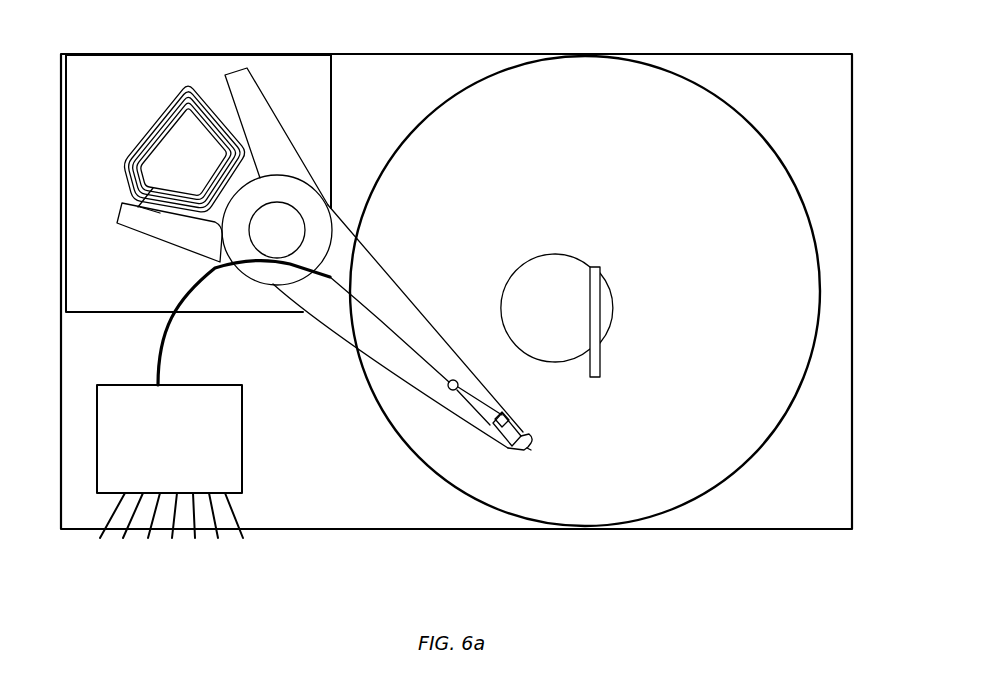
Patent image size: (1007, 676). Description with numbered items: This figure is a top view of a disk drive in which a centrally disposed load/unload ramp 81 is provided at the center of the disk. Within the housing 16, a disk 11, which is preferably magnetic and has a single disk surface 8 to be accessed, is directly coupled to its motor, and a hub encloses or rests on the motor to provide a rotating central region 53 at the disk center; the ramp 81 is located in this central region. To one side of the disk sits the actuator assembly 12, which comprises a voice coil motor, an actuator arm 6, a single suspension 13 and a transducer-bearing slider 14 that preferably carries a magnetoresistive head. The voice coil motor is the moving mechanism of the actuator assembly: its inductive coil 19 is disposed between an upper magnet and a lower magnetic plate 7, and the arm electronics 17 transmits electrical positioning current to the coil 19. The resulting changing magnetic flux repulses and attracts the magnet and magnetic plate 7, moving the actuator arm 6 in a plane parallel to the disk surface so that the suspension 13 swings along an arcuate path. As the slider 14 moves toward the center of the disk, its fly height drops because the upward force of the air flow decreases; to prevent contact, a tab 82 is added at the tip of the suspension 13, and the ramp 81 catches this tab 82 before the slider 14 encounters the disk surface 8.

The housing 16 is at (745, 53).
The lower magnetic plate 7 is at (126, 292).
The disk 11 is at (748, 122).
The disk surface 8 is at (629, 141).
The rotating central region 53 is at (578, 247).
The load/unload ramp 81 is at (600, 363).
The inductive coil 19 is at (158, 118).
The actuator arm 6 is at (262, 108).
The actuator assembly 12 is at (312, 165).
The suspension 13 is at (413, 305).
The arm electronics 17 is at (242, 445).
The transducer-bearing slider 14 is at (507, 422).
The tab 82 is at (528, 448).